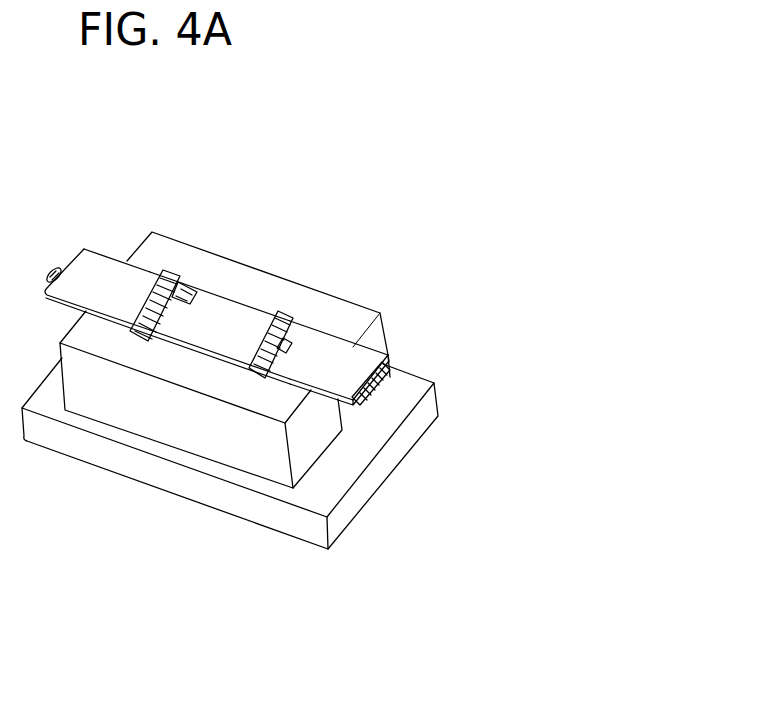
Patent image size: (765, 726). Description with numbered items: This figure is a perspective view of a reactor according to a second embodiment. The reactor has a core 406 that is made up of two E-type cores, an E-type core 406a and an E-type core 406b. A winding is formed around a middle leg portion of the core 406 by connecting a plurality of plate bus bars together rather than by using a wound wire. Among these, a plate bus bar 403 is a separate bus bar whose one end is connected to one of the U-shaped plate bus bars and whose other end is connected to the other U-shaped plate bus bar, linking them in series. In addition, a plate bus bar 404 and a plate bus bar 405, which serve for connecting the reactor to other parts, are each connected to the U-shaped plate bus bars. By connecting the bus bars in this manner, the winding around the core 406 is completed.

The plate bus bar 403 is at (222, 327).
The plate bus bar 404 is at (105, 280).
The plate bus bar 405 is at (342, 363).
The core 406 is at (512, 433).
The E-type core 406a is at (303, 445).
The E-type core 406b is at (350, 412).